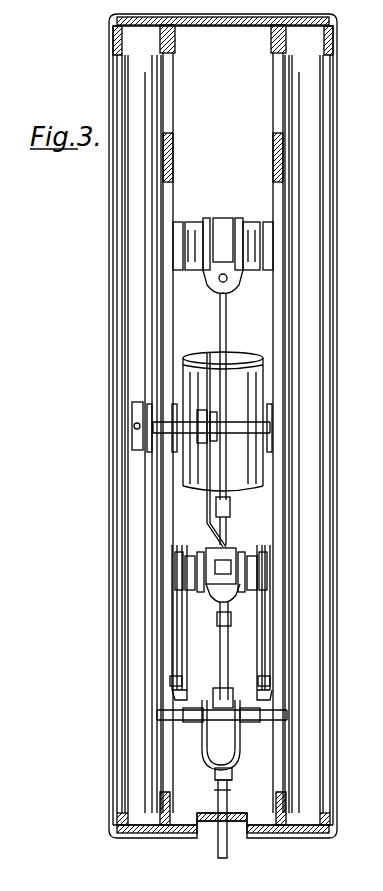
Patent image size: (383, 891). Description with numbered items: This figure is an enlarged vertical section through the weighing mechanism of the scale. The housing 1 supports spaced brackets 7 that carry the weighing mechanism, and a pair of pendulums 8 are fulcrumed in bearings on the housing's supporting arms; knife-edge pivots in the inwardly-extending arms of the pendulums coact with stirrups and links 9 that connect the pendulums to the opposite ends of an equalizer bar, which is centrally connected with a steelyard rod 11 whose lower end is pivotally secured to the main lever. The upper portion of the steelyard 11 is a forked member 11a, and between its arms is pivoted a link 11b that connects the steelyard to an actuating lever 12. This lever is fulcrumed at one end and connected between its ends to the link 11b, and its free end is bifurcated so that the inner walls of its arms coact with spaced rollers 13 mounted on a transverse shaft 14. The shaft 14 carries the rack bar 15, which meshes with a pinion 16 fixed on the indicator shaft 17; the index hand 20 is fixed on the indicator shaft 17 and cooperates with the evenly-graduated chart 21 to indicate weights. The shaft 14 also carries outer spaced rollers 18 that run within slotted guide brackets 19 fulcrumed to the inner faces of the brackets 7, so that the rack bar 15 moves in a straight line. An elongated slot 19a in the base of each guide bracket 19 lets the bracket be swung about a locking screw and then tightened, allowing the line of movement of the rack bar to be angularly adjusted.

The housing 1 is at (338, 125).
The spaced brackets 7 is at (272, 155).
The pendulums 8 is at (228, 318).
The stirrups and links 9 is at (220, 290).
The steelyard rod 11 is at (232, 798).
The forked member 11a is at (222, 732).
The link 11b is at (197, 752).
The actuating lever 12 is at (229, 637).
The spaced rollers 13 is at (236, 557).
The transverse shaft 14 is at (178, 572).
The rack bar 15 is at (207, 498).
The pinion 16 is at (197, 443).
The indicator shaft 17 is at (265, 425).
The outer spaced rollers 18 is at (299, 565).
The slotted guide brackets 19 is at (257, 558).
The elongated slot 19a is at (263, 683).
The index hand 20 is at (145, 197).
The evenly-graduated chart 21 is at (148, 215).